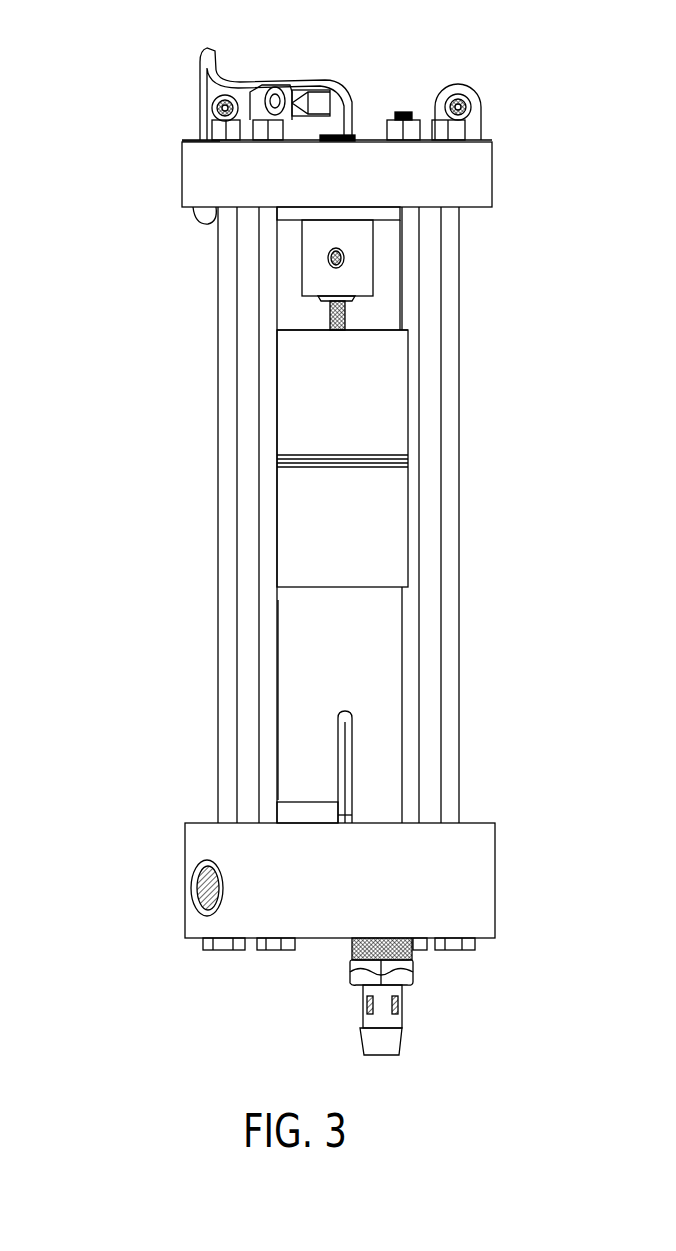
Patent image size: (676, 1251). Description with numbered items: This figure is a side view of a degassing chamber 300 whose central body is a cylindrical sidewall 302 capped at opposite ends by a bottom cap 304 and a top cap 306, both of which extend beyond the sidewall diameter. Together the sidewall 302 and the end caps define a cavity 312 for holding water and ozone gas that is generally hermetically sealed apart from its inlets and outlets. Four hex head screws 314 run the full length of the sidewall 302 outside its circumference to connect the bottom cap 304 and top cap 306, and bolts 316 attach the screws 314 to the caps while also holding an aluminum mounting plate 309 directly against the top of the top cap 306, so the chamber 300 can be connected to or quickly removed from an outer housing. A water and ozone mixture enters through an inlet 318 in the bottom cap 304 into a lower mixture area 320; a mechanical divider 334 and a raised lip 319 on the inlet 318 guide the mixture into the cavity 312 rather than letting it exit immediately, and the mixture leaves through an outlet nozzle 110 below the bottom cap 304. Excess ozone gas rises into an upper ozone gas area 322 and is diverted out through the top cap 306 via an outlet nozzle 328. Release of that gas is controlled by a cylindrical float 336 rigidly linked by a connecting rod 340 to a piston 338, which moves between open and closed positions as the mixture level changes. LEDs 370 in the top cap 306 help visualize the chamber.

The degassing chamber 300 is at (98, 332).
The cylindrical sidewall 302 is at (388, 670).
The bottom cap 304 is at (480, 876).
The top cap 306 is at (484, 178).
The aluminum mounting plate 309 is at (185, 141).
The cavity 312 is at (275, 652).
The hex head screws 314 is at (410, 287).
The bolts 316 is at (262, 100).
The inlet 318 is at (190, 886).
The raised lip 319 is at (330, 818).
The lower mixture area 320 is at (339, 800).
The upper ozone gas area 322 is at (275, 268).
The outlet nozzle 328 is at (300, 85).
The mechanical divider 334 is at (338, 780).
The cylindrical float 336 is at (393, 553).
The piston 338 is at (361, 288).
The connecting rod 340 is at (330, 333).
The LEDs 370 is at (206, 223).
The outlet nozzle 110 is at (398, 1020).